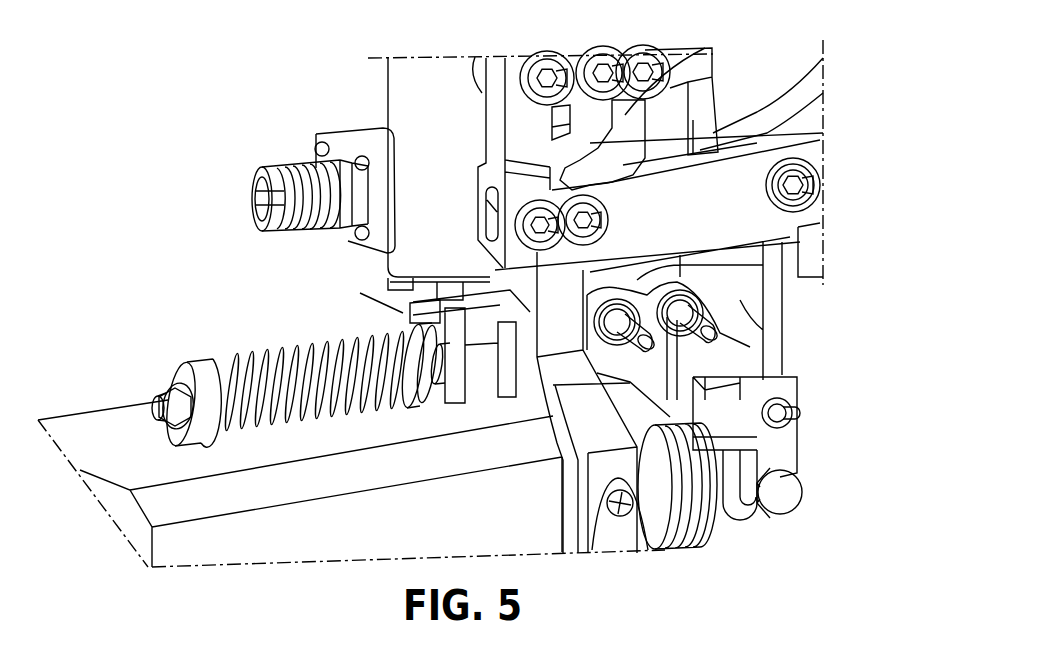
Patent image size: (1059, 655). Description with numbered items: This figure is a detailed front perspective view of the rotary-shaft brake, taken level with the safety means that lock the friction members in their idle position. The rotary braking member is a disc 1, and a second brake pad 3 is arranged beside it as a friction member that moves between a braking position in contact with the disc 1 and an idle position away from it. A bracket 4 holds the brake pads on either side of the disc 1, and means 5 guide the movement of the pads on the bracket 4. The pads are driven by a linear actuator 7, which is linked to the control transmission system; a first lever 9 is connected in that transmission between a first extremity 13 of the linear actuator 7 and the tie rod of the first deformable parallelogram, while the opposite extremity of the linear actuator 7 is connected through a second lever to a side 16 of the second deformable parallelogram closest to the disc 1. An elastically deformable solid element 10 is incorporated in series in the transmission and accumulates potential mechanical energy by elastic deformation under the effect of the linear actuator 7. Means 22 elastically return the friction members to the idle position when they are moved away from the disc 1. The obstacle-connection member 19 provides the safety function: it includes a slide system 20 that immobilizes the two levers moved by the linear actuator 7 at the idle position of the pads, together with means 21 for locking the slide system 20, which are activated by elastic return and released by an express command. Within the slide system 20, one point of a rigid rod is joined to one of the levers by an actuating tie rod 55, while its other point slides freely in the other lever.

The disc 1 is at (817, 85).
The second brake pad 3 is at (715, 122).
The bracket 4 is at (747, 217).
The means for guiding the movement 5 is at (510, 123).
The linear actuator 7 is at (88, 418).
The first lever 9 is at (775, 452).
The elastically deformable solid element 10 is at (772, 297).
The first extremity of the linear actuator 13 is at (727, 533).
The side of the second deformable parallelogram 16 is at (662, 100).
The obstacle-connection member 19 is at (412, 317).
The slide system 20 is at (805, 271).
The means for locking the slide system 21 is at (405, 106).
The means for elastically returning 22 is at (268, 350).
The actuating tie rod 55 is at (722, 345).